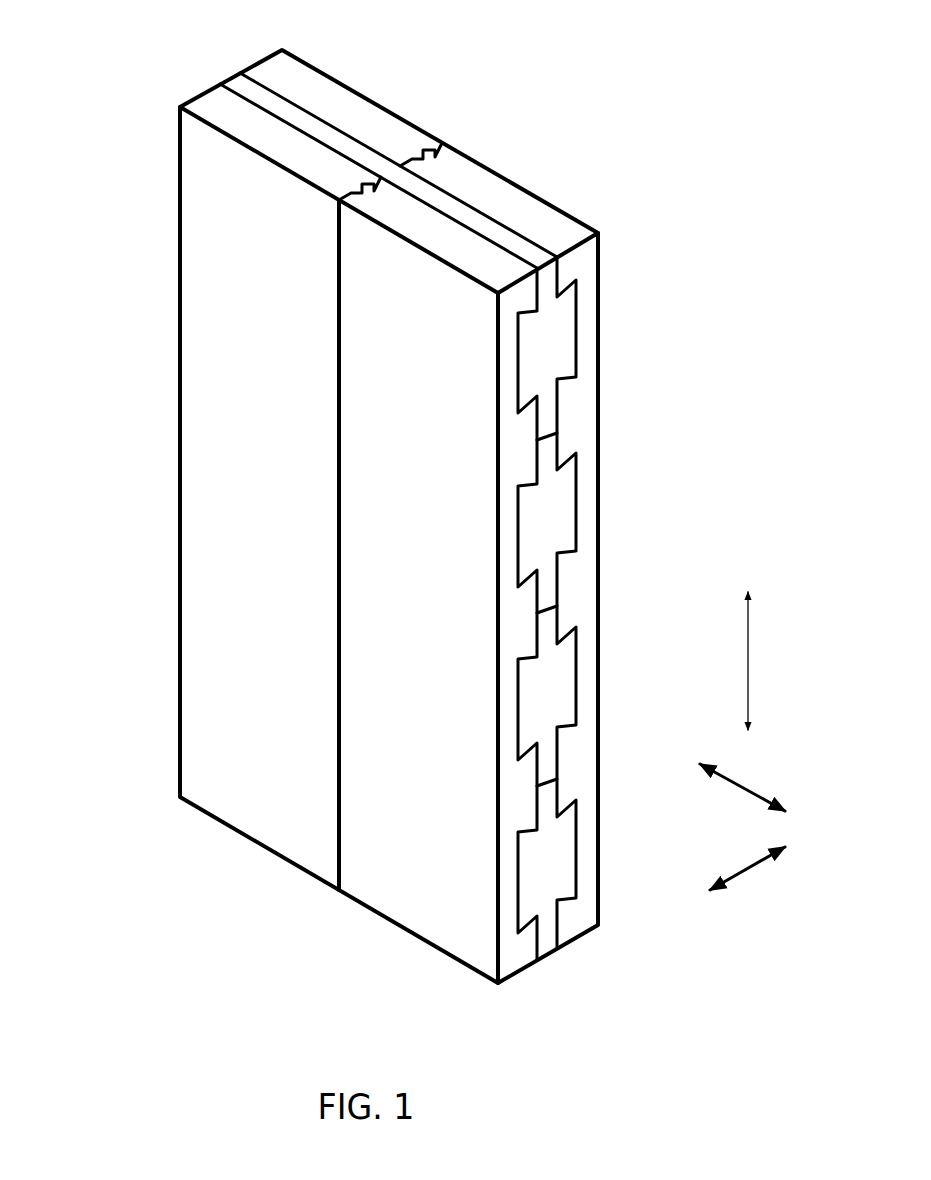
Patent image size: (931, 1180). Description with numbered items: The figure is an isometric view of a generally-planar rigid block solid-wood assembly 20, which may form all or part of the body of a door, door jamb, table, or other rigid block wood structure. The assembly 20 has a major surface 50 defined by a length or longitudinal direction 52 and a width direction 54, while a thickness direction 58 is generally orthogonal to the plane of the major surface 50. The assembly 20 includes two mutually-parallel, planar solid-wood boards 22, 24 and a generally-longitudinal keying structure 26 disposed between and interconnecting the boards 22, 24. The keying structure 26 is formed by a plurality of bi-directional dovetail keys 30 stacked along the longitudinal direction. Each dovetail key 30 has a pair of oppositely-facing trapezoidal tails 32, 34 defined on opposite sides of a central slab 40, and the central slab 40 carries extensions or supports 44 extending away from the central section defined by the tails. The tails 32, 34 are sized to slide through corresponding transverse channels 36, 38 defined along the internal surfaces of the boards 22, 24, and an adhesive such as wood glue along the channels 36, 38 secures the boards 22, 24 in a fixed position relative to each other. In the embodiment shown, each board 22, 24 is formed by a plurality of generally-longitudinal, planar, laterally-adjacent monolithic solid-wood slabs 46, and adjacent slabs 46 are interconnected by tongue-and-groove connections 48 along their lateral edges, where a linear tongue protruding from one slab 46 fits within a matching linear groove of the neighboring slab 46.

The generally-planar rigid block solid-wood assembly 20 is at (420, 543).
The solid-wood board 22 is at (520, 973).
The solid-wood board 24 is at (580, 938).
The keying structure 26 is at (549, 976).
The bi-directional dovetail key 30 is at (550, 332).
The trapezoidal tail 32 is at (536, 312).
The trapezoidal tail 34 is at (566, 384).
The transverse channel 36 is at (508, 362).
The transverse channel 38 is at (594, 295).
The central slab 40 is at (558, 413).
The extension (support) 44 is at (561, 273).
The monolithic solid-wood slab 46 is at (235, 832).
The tongue-and-groove connection 48 is at (341, 172).
The major surface 50 is at (219, 332).
The length (longitudinal) direction 52 is at (748, 662).
The width direction 54 is at (742, 787).
The thickness direction 58 is at (748, 874).